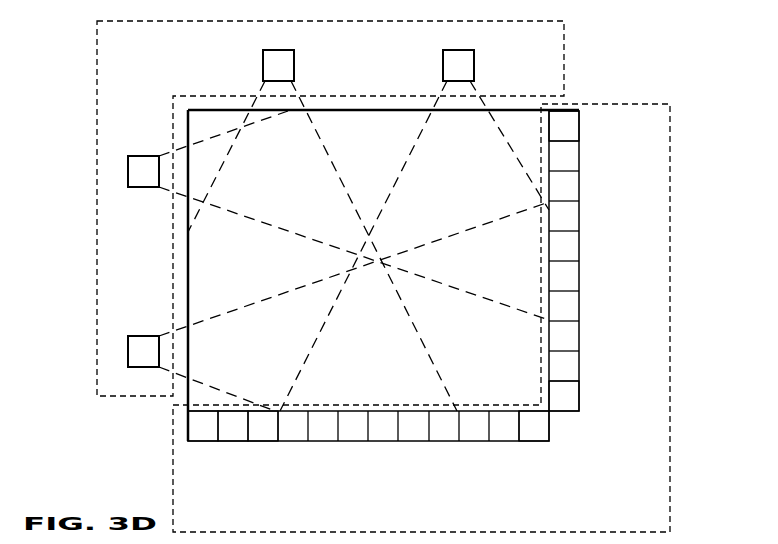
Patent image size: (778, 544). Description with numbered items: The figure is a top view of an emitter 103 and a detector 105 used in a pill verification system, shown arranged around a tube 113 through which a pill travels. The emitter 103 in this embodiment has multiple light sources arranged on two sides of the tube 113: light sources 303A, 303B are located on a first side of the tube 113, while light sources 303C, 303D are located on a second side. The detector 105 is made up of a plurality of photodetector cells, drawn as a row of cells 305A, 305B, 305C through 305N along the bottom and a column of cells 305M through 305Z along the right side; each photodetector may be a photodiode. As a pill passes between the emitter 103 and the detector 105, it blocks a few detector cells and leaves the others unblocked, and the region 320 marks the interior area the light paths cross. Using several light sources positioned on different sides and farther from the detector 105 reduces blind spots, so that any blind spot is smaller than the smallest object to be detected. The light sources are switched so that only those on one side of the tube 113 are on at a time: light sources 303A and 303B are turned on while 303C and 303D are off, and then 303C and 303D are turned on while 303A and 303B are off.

The emitter 103 is at (563, 80).
The detector 105 is at (670, 515).
The tube 113 is at (188, 110).
The light source 303A is at (294, 62).
The light source 303B is at (474, 62).
The light source 303C is at (140, 156).
The light source 303D is at (140, 336).
The photodetector 305A is at (203, 442).
The photodetector 305B is at (233, 442).
The photodetector 305C is at (263, 442).
The photodetector 305N is at (534, 442).
The photodetector 305M is at (572, 395).
The photodetector 305Z is at (572, 125).
The touch-sensitive area 320 is at (384, 316).